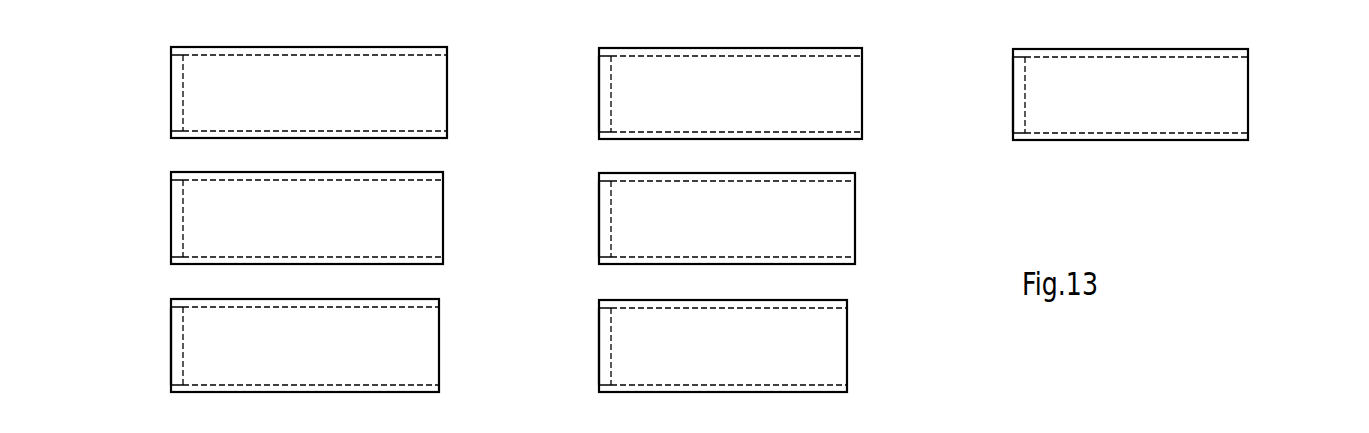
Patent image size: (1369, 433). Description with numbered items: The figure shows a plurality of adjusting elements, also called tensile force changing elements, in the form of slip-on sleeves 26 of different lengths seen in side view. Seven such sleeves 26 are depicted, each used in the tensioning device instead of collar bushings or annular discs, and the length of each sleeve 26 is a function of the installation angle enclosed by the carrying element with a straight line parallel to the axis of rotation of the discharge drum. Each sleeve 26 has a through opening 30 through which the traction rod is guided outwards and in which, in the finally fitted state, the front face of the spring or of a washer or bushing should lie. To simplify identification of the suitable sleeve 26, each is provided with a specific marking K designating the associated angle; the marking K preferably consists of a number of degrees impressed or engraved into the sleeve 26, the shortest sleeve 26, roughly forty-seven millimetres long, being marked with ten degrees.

The slip-on sleeve 26 is at (434, 80).
The through opening 30 is at (177, 360).
The marking K is at (214, 371).